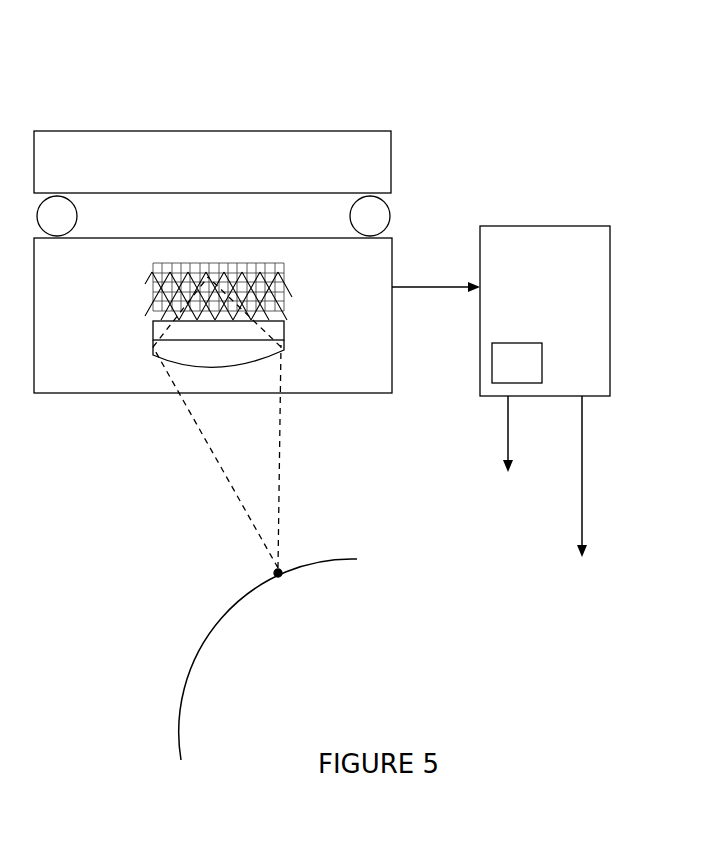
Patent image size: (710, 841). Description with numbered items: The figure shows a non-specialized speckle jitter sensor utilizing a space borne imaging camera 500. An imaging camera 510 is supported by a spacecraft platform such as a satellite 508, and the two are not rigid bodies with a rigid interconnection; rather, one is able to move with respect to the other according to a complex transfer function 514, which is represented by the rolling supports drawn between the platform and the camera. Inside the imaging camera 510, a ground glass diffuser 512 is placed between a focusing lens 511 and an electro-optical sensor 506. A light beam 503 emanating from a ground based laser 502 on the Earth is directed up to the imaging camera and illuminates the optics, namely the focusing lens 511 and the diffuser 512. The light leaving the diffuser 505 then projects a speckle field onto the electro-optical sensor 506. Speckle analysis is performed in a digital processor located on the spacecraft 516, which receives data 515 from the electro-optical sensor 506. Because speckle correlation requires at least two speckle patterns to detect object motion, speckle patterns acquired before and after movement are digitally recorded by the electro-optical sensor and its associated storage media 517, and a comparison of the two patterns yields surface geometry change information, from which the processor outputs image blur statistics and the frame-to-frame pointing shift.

The space borne imaging camera 500 is at (407, 74).
The ground based laser 502 is at (274, 572).
The light beam 503 is at (288, 503).
The light leaving the diffuser 505 is at (147, 282).
The electro-optical sensor 506 is at (270, 264).
The spacecraft platform 508 is at (372, 151).
The imaging camera 510 is at (384, 388).
The focusing lens 511 is at (280, 347).
The ground glass diffuser 512 is at (280, 331).
The complex transfer function 514 is at (390, 215).
The data 515 is at (405, 283).
The digital processor 516 is at (562, 315).
The storage media 517 is at (532, 375).